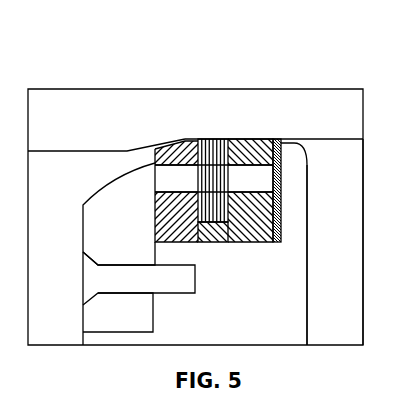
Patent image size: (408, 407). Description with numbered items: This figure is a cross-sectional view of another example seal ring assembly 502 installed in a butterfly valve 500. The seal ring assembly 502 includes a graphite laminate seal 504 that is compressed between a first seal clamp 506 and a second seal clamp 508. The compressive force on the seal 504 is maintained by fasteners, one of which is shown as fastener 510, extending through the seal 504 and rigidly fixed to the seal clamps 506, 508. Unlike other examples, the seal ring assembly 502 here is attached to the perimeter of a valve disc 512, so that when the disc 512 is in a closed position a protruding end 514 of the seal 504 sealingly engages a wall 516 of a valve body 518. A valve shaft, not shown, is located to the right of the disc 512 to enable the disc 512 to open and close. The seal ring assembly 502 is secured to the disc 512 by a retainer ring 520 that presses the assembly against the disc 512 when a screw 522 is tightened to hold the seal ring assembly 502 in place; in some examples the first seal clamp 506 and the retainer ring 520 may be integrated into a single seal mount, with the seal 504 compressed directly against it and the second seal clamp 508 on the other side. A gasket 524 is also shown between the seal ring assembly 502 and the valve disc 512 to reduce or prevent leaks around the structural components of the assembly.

The butterfly valve 500 is at (138, 72).
The seal ring assembly 502 is at (182, 138).
The graphite laminate seal 504 is at (210, 214).
The first seal clamp 506 is at (162, 224).
The second seal clamp 508 is at (250, 222).
The fastener 510 is at (165, 182).
The valve disc 512 is at (298, 287).
The protruding end 514 is at (212, 139).
The wall 516 is at (304, 138).
The valve body 518 is at (349, 131).
The retainer ring 520 is at (98, 212).
The screw 522 is at (93, 287).
The gasket 524 is at (282, 214).